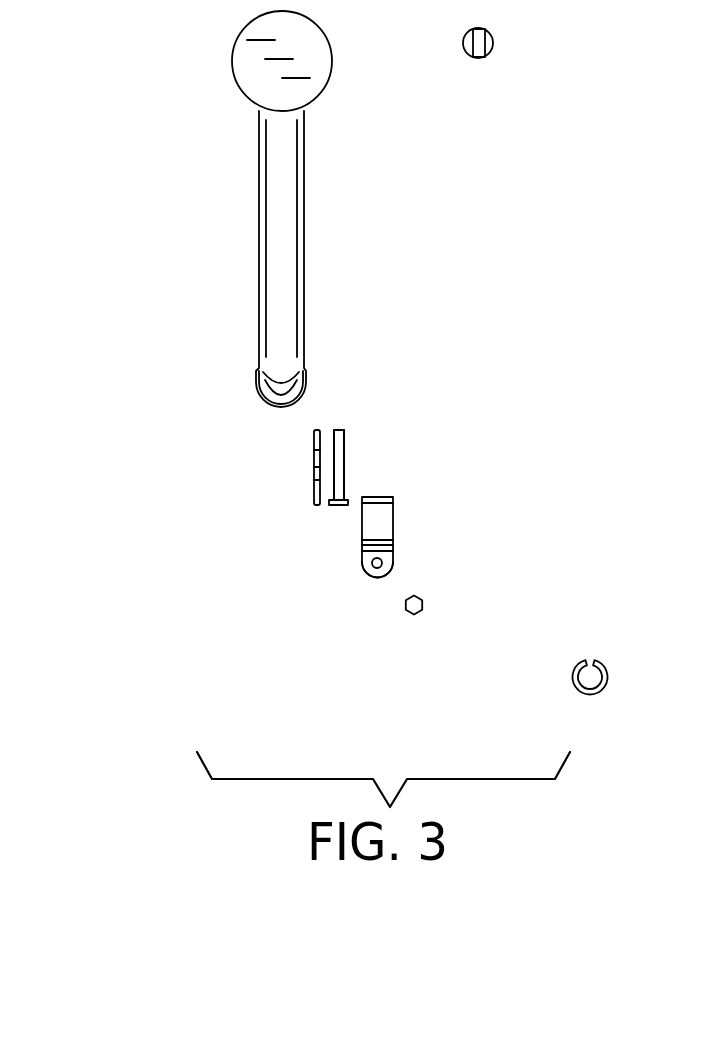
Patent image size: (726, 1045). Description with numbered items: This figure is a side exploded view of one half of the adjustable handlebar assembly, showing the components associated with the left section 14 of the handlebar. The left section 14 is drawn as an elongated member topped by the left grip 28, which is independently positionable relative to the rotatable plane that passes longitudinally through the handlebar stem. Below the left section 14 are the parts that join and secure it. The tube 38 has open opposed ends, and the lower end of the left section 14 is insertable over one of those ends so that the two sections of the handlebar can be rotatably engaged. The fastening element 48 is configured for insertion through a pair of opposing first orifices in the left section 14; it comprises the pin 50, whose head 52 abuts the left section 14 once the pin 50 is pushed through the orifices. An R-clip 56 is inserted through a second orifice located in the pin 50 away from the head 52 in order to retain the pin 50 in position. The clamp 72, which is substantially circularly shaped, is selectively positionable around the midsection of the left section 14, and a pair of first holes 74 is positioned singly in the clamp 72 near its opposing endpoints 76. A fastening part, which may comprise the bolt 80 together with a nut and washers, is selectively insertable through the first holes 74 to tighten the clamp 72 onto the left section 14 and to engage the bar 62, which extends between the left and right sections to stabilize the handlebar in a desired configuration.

The left section 14 is at (275, 203).
The left grip 28 is at (240, 66).
The tube 38 is at (612, 675).
The fastening element 48 is at (311, 449).
The pin 50 is at (347, 462).
The head 52 is at (337, 508).
The R-clip 56 is at (310, 461).
The bar 62 is at (495, 40).
The clamp 72 is at (377, 543).
The first holes 74 is at (388, 560).
The endpoints 76 is at (373, 578).
The bolt 80 is at (408, 612).